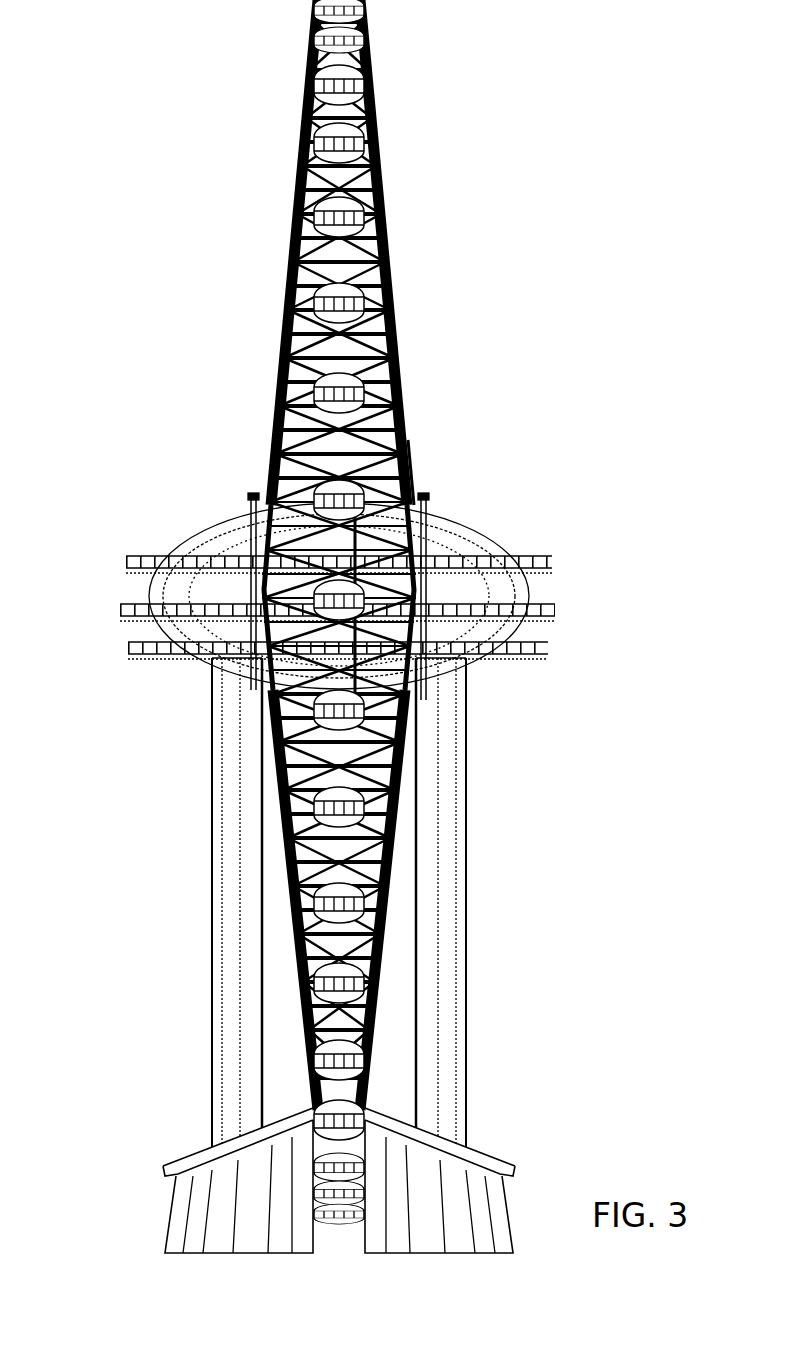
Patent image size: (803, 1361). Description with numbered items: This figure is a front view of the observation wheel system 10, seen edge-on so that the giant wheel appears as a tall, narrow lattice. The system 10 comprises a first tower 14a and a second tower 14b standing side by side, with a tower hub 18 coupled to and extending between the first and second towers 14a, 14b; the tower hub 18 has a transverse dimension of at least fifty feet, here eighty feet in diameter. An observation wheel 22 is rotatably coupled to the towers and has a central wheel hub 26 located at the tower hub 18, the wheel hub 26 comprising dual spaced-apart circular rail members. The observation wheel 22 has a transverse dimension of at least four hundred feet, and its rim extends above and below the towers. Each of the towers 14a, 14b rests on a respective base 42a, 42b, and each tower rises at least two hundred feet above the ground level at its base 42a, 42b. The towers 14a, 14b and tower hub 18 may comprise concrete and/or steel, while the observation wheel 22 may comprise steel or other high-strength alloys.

The observation wheel system 10 is at (133, 168).
The observation wheel 22 is at (392, 217).
The wheel hub 26 is at (418, 483).
The tower hub 18 is at (428, 497).
The first tower 14a is at (210, 823).
The second tower 14b is at (467, 825).
The base 42a is at (170, 1180).
The base 42b is at (512, 1183).